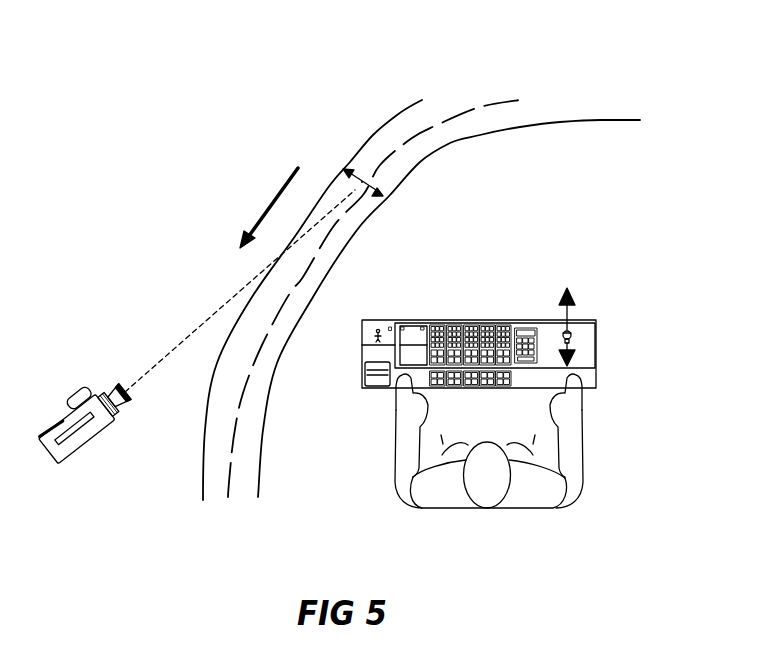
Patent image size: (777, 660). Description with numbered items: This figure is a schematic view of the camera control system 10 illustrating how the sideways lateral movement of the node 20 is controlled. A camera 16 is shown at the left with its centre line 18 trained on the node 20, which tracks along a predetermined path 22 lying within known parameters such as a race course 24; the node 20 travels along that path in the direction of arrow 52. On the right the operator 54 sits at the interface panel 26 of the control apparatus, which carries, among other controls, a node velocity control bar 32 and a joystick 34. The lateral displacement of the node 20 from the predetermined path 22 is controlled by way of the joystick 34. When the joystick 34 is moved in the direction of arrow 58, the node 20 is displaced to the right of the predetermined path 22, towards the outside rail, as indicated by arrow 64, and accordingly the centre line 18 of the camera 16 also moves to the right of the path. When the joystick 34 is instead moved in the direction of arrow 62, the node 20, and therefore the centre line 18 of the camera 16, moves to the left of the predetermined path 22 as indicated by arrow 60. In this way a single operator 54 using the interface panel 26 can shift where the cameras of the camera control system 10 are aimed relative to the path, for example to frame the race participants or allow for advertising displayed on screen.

The camera control system 10 is at (233, 116).
The camera 16 is at (80, 440).
The centre line 18 is at (177, 340).
The node 20 is at (362, 180).
The predetermined path 22 is at (497, 102).
The race course 24 is at (247, 469).
The interface panel 26 is at (487, 325).
The node velocity control bar 32 is at (362, 346).
The joystick 34 is at (573, 332).
The arrow indicating direction of node movement 52 is at (270, 203).
The operator 54 is at (530, 493).
The arrow indicating joystick direction for rightward displacement 58 is at (570, 312).
The arrow indicating leftward node displacement 60 is at (362, 180).
The arrow indicating joystick direction for leftward displacement 62 is at (580, 347).
The arrow indicating rightward node displacement 64 is at (365, 186).